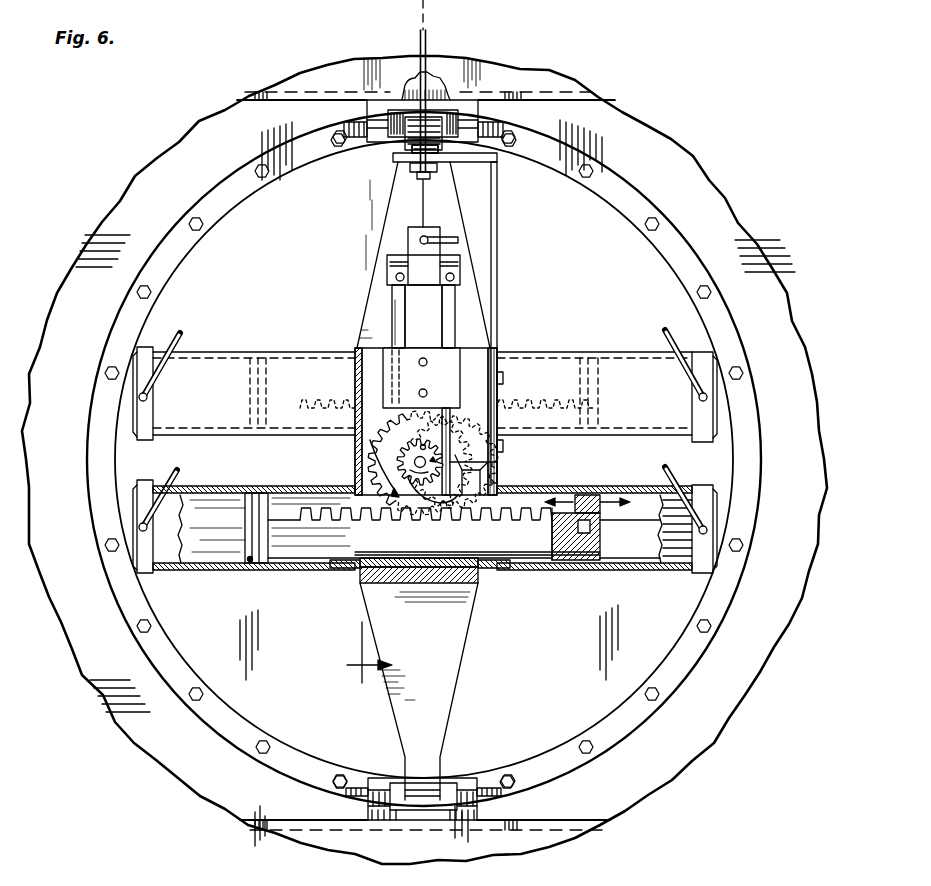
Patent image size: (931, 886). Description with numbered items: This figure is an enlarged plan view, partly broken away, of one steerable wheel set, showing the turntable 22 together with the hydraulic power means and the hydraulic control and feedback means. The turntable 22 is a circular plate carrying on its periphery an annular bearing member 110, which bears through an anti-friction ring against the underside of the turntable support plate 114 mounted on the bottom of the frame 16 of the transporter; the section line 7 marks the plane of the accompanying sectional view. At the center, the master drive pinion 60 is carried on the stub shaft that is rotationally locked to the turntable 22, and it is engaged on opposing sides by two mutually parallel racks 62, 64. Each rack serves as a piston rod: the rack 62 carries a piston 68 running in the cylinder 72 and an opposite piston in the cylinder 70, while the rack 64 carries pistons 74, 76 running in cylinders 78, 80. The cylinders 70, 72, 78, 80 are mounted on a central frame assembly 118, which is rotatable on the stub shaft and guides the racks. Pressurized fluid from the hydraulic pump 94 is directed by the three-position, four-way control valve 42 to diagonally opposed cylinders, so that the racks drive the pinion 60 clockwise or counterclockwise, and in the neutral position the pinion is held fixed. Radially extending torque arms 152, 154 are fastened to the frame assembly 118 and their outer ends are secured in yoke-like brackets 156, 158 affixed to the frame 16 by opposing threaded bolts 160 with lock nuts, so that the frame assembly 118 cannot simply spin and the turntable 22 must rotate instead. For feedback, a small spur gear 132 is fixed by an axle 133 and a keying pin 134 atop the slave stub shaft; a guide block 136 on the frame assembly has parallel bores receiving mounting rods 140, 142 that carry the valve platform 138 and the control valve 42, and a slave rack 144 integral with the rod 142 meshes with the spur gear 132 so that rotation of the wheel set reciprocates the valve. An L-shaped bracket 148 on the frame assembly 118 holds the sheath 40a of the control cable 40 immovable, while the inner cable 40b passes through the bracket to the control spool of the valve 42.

The section line 7- 7 is at (365, 656).
The frame 16 is at (490, 74).
The turntable 22 is at (600, 690).
The control cable 40 is at (428, 46).
The sheath 40a is at (412, 136).
The cable 40b is at (422, 185).
The control valve 42 is at (440, 238).
The master drive pinion 60 is at (373, 470).
The rack 62 is at (296, 375).
The rack 64 is at (300, 542).
The piston 68 is at (590, 355).
The cylinder 70 is at (212, 352).
The cylinder 72 is at (630, 352).
The piston 74 is at (250, 548).
The piston 76 is at (260, 370).
The cylinder 78 is at (195, 566).
The cylinder 80 is at (624, 495).
The hydraulic pump 94 is at (188, 885).
The annular bearing member 110 is at (688, 640).
The turntable support plate 114 is at (778, 578).
The central frame assembly 118 is at (479, 583).
The spur gear 132 is at (497, 464).
The axle 133 is at (413, 514).
The keying pin 134 is at (370, 438).
The guide block 136 is at (455, 348).
The valve platform 138 is at (455, 278).
The mounting rod 140 is at (392, 308).
The mounting rod 142 is at (450, 305).
The slave rack 144 is at (488, 480).
The L-shaped bracket 148 is at (500, 165).
The torque arm 152 is at (400, 226).
The torque arm 154 is at (412, 715).
The bracket 156 is at (378, 98).
The bracket 158 is at (478, 780).
The bolts 160 is at (510, 125).